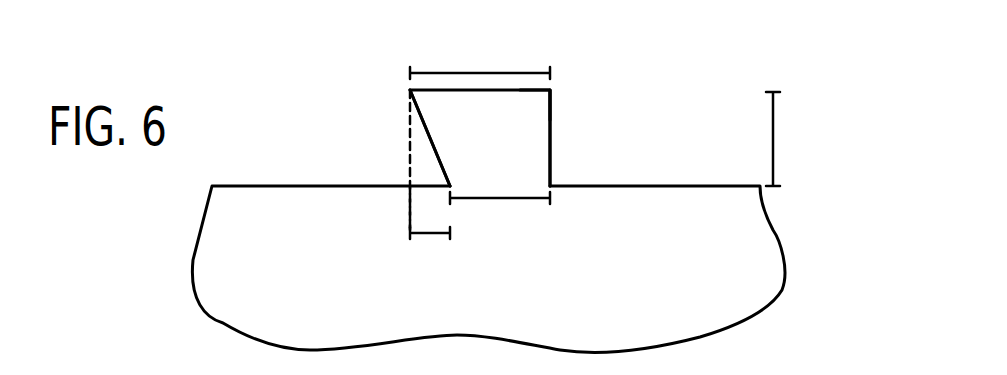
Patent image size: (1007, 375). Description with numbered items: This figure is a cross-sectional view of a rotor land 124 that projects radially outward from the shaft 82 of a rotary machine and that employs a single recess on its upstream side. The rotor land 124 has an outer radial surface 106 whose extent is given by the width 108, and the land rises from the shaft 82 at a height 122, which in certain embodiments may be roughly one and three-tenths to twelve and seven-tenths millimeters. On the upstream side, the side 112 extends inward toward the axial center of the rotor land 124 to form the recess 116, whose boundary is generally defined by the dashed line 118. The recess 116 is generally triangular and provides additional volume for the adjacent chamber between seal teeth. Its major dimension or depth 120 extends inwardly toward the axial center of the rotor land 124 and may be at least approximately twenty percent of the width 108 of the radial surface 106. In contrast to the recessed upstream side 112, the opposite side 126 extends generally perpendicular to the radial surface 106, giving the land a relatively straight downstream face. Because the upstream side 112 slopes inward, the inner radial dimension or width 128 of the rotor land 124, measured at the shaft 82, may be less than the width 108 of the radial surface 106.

The shaft 82 is at (773, 230).
The radial surface 106 is at (523, 88).
The width of the radial surface 108 is at (428, 71).
The upstream side 112 is at (445, 167).
The recess 116 is at (435, 152).
The dashed line 118 is at (410, 205).
The depth 120 is at (428, 243).
The height 122 is at (773, 138).
The rotor land 124 is at (551, 168).
The opposite side 126 is at (551, 117).
The inner radial dimension or width 128 is at (477, 200).